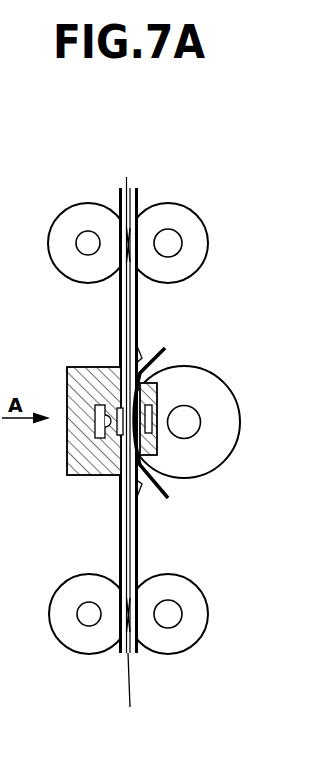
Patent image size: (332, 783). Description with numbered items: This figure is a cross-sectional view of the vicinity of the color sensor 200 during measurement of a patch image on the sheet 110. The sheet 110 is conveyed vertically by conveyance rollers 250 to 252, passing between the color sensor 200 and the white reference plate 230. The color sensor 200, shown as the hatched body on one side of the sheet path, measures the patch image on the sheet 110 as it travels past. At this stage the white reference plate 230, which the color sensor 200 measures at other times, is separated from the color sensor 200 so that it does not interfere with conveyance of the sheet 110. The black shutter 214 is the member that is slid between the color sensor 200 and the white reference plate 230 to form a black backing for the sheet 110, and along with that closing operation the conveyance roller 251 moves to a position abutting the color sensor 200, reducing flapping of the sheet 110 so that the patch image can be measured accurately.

The sheet 110 is at (127, 183).
The color sensor 200 is at (84, 367).
The shutter 214 is at (164, 500).
The white reference plate 230 is at (157, 397).
The conveyance roller 250 is at (197, 230).
The conveyance roller 251 is at (225, 389).
The conveyance roller 252 is at (198, 613).